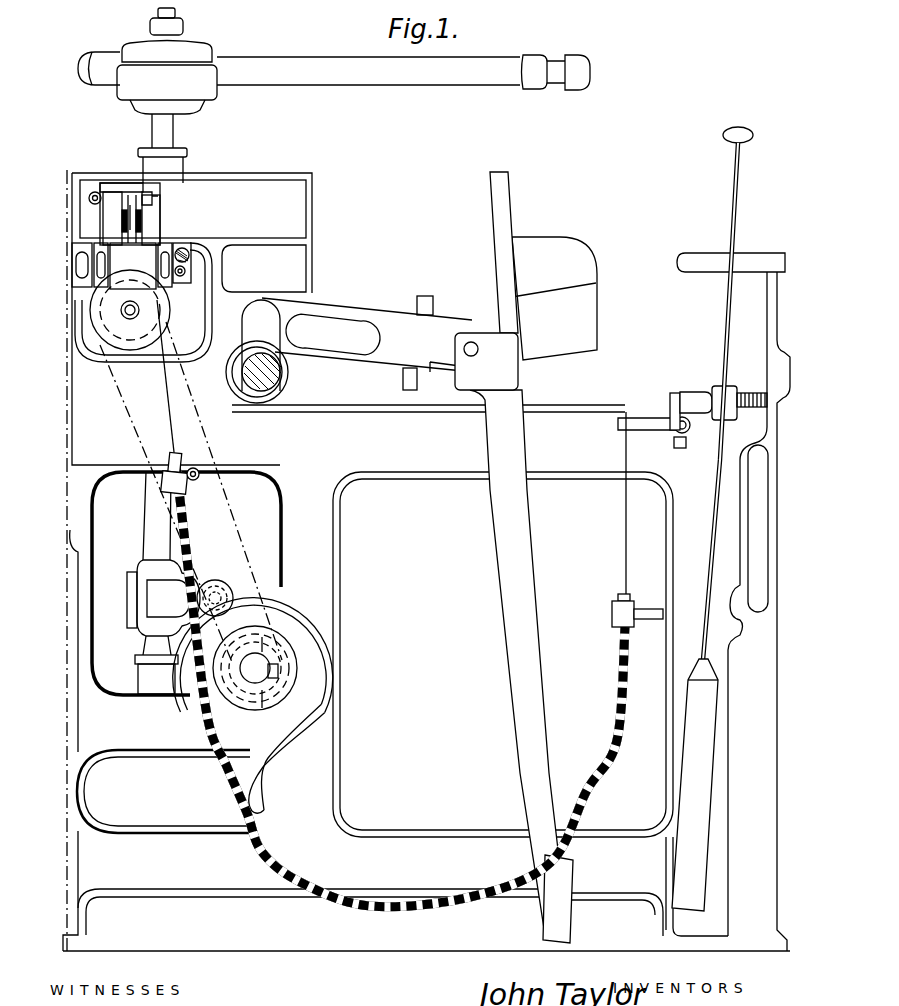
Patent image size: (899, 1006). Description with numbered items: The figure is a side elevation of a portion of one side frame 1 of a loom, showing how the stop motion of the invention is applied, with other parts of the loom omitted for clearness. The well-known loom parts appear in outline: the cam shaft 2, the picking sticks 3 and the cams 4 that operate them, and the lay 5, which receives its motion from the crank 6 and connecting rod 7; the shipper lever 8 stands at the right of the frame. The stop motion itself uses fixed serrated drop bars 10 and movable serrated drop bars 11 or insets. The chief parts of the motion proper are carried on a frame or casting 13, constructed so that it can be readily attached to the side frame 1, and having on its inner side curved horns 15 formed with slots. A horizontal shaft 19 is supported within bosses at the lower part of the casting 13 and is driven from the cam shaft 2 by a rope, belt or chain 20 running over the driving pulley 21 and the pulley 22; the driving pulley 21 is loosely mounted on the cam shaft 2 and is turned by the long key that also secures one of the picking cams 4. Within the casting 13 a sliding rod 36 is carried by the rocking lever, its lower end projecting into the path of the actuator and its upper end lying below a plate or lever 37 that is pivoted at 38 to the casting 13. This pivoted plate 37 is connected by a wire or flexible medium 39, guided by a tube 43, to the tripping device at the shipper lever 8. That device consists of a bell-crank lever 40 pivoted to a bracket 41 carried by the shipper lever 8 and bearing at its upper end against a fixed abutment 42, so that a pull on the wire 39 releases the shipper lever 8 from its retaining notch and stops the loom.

The side frame 1 is at (426, 562).
The cam shaft 2 is at (255, 668).
The picking sticks 3 is at (386, 70).
The cams 4 is at (273, 721).
The lay 5 is at (514, 557).
The crank 6 is at (261, 345).
The connecting rod 7 is at (385, 332).
The shipper lever 8 is at (729, 341).
The fixed serrated drop bars 10 is at (143, 231).
The movable serrated drop bars 11 is at (124, 229).
The frame or casting 13 is at (111, 185).
The curved horns 15 is at (154, 214).
The horizontal shaft 19 is at (128, 316).
The rope, belt or chain 20 is at (205, 430).
The driving pulley 21 is at (274, 671).
The pulley 22 is at (160, 308).
The sliding rod 36 is at (145, 200).
The plate or lever 37 is at (131, 185).
The pivot 38 is at (88, 192).
The wire or flexible medium 39 is at (167, 427).
The bell-crank lever 40 is at (643, 420).
The bracket 41 is at (697, 393).
The fixed abutment 42 is at (662, 406).
The tube 43 is at (333, 885).